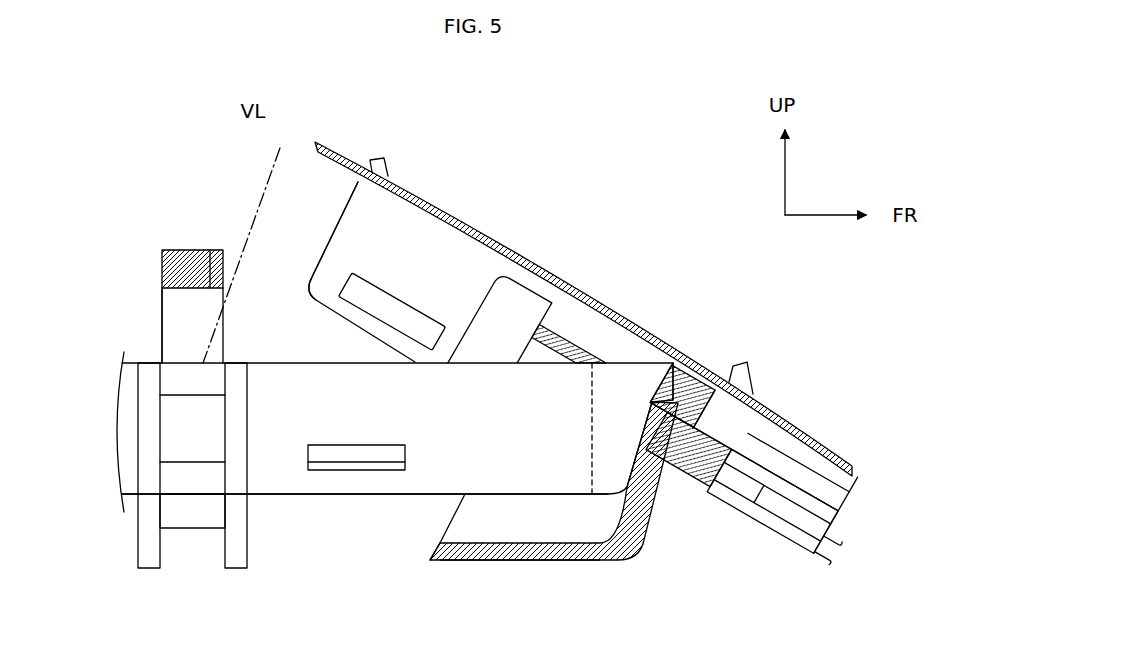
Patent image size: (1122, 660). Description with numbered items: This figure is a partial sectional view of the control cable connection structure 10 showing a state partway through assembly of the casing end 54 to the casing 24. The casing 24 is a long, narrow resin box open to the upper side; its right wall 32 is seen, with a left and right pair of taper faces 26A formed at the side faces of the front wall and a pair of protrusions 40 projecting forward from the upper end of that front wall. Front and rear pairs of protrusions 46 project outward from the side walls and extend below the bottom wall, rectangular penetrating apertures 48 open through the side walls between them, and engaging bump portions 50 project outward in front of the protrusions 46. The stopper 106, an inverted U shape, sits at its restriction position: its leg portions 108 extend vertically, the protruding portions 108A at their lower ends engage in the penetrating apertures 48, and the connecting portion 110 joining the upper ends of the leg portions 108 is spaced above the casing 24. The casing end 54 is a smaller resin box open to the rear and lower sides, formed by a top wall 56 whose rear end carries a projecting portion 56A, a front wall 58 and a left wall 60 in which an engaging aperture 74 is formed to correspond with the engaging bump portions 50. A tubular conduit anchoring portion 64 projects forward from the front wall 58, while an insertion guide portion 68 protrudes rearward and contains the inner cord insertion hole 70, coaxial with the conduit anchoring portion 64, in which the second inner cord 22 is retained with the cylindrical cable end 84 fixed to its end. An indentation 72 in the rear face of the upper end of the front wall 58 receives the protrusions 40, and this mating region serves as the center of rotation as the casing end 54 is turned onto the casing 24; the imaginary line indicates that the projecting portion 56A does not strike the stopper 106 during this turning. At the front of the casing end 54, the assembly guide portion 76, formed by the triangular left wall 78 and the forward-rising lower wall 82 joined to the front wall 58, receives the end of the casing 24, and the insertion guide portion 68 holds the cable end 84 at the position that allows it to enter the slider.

The control cable connection structure 10 is at (618, 160).
The second inner cord 22 is at (785, 532).
The casing 24 is at (330, 497).
The taper faces 26A is at (602, 430).
The right wall 32 is at (420, 490).
The protrusions 40 is at (668, 395).
The protrusions 46 is at (142, 572).
The penetrating apertures 48 is at (165, 442).
The engaging bump portions 50 is at (360, 448).
The casing end 54 is at (457, 185).
The top wall 56 is at (660, 508).
The projecting portion 56A is at (332, 140).
The front wall 58 is at (680, 507).
The left wall 60 is at (362, 237).
The conduit anchoring portion 64 is at (812, 448).
The insertion guide portion 68 is at (582, 337).
The inner cord insertion hole 70 is at (705, 440).
The indentation 72 is at (690, 350).
The engaging apertures 74 is at (372, 302).
The assembly guide portion 76 is at (597, 562).
The left wall 78 is at (540, 548).
The lower wall 82 is at (440, 562).
The cable end 84 is at (528, 300).
The stopper 106 is at (182, 247).
The leg portions 108 is at (162, 300).
The protruding portions 108A is at (200, 438).
The connecting portion 110 is at (203, 250).